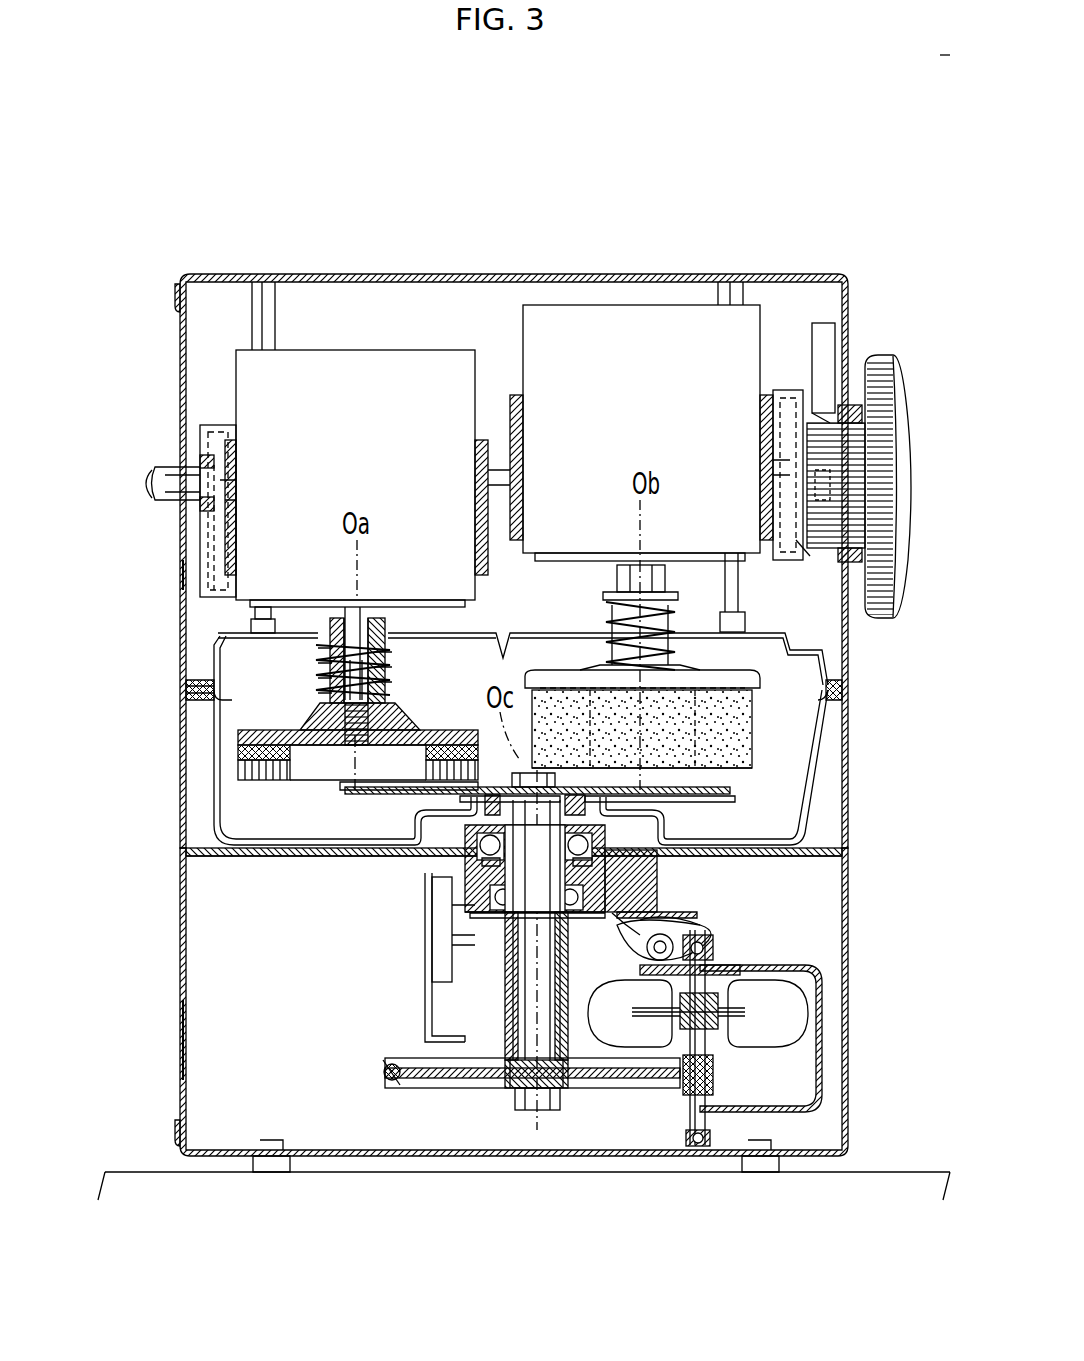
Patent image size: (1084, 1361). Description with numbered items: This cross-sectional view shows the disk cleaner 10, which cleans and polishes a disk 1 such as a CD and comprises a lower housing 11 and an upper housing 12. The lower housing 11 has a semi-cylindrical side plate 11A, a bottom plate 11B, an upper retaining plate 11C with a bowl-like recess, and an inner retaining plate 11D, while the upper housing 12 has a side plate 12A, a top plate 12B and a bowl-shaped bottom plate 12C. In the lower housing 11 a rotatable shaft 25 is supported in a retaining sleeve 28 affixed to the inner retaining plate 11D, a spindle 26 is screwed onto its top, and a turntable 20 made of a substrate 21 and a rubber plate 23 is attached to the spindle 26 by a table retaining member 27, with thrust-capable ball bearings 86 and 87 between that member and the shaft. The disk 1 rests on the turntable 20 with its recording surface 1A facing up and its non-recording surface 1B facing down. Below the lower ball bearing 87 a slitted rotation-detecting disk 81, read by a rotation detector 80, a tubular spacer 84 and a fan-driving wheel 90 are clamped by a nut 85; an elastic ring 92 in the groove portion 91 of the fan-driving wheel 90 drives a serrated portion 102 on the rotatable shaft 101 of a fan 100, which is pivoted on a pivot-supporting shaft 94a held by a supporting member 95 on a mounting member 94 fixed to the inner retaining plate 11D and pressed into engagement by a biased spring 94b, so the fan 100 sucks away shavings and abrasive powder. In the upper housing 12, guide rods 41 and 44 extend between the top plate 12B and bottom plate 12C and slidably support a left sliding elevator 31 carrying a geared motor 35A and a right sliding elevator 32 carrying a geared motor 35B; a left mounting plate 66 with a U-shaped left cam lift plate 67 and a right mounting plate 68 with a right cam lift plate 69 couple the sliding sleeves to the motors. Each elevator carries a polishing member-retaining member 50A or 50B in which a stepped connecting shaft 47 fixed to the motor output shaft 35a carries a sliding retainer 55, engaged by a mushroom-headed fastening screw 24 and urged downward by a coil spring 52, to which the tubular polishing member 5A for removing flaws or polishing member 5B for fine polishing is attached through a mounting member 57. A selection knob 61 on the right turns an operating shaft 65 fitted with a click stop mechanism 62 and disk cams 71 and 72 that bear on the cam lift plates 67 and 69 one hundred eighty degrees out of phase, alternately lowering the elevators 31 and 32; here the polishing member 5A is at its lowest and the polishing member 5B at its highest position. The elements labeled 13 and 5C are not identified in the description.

The disk cleaner 10 is at (537, 205).
The upper housing 12 is at (285, 272).
The top plate 12B is at (355, 275).
The side plate 12A is at (183, 575).
The bottom plate 12C is at (845, 685).
The lower housing 11 is at (178, 823).
The side plate 11A is at (182, 1038).
The bottom plate 11B is at (537, 1172).
The upper retaining plate 11C is at (805, 777).
The inner retaining plate 11D is at (822, 858).
The partition 13 is at (335, 848).
The mounting member 57 is at (240, 755).
The tub rim 5C is at (255, 787).
The geared motor 35A is at (390, 370).
The output shaft 35a is at (348, 615).
The geared motor 35B is at (612, 318).
The left cam lift plate 67 is at (230, 450).
The operating shaft 65 is at (500, 470).
The right mounting plate 68 is at (512, 395).
The left sliding elevator 31 is at (215, 410).
The right sliding elevator 32 is at (775, 375).
The left mounting plate 66 is at (190, 475).
The disk cam 71 is at (200, 548).
The disk cam 72 is at (796, 548).
The guide rod 41 is at (256, 617).
The guide rod 44 is at (740, 592).
The right cam lift plate 69 is at (793, 388).
The click stop mechanism 62 is at (830, 387).
The selection knob 61 is at (885, 390).
The polishing member-retaining member 50A is at (310, 678).
The polishing member-retaining member 50B is at (598, 612).
The stepped connecting shaft 47 is at (330, 710).
The coil spring 52 is at (385, 655).
The sliding retainer 55 is at (420, 733).
The fastening screw 24 is at (350, 748).
The spindle 26 is at (460, 790).
The polishing member 5A is at (272, 782).
The polishing member 5B is at (735, 718).
The recording surface 1A is at (740, 760).
The non-recording surface 1B is at (725, 800).
The disk 1 is at (490, 782).
The substrate 21 is at (690, 785).
The rubber plate 23 is at (735, 800).
The rotatable shaft 25 is at (515, 1015).
The ball bearing 86 is at (475, 835).
The table retaining member 27 is at (480, 880).
The retaining sleeve 28 is at (480, 893).
The ball bearing 87 is at (580, 905).
The rotation detector 80 is at (425, 967).
The rotation-detecting disk 81 is at (455, 925).
The fan-driving wheel 90 is at (615, 1080).
The elastic ring 92 is at (383, 1070).
The outer peripheral groove portion 91 is at (385, 1080).
The tubular spacer 84 is at (505, 1060).
The nut 85 is at (560, 1090).
The mounting member 94 is at (635, 905).
The pivot-supporting shaft 94a is at (650, 945).
The biased spring 94b is at (690, 945).
The turntable 20 is at (715, 945).
The supporting member 95 is at (720, 950).
The rotatable shaft 101 is at (705, 1045).
The fan 100 is at (820, 990).
The serrated portion 102 is at (700, 1075).